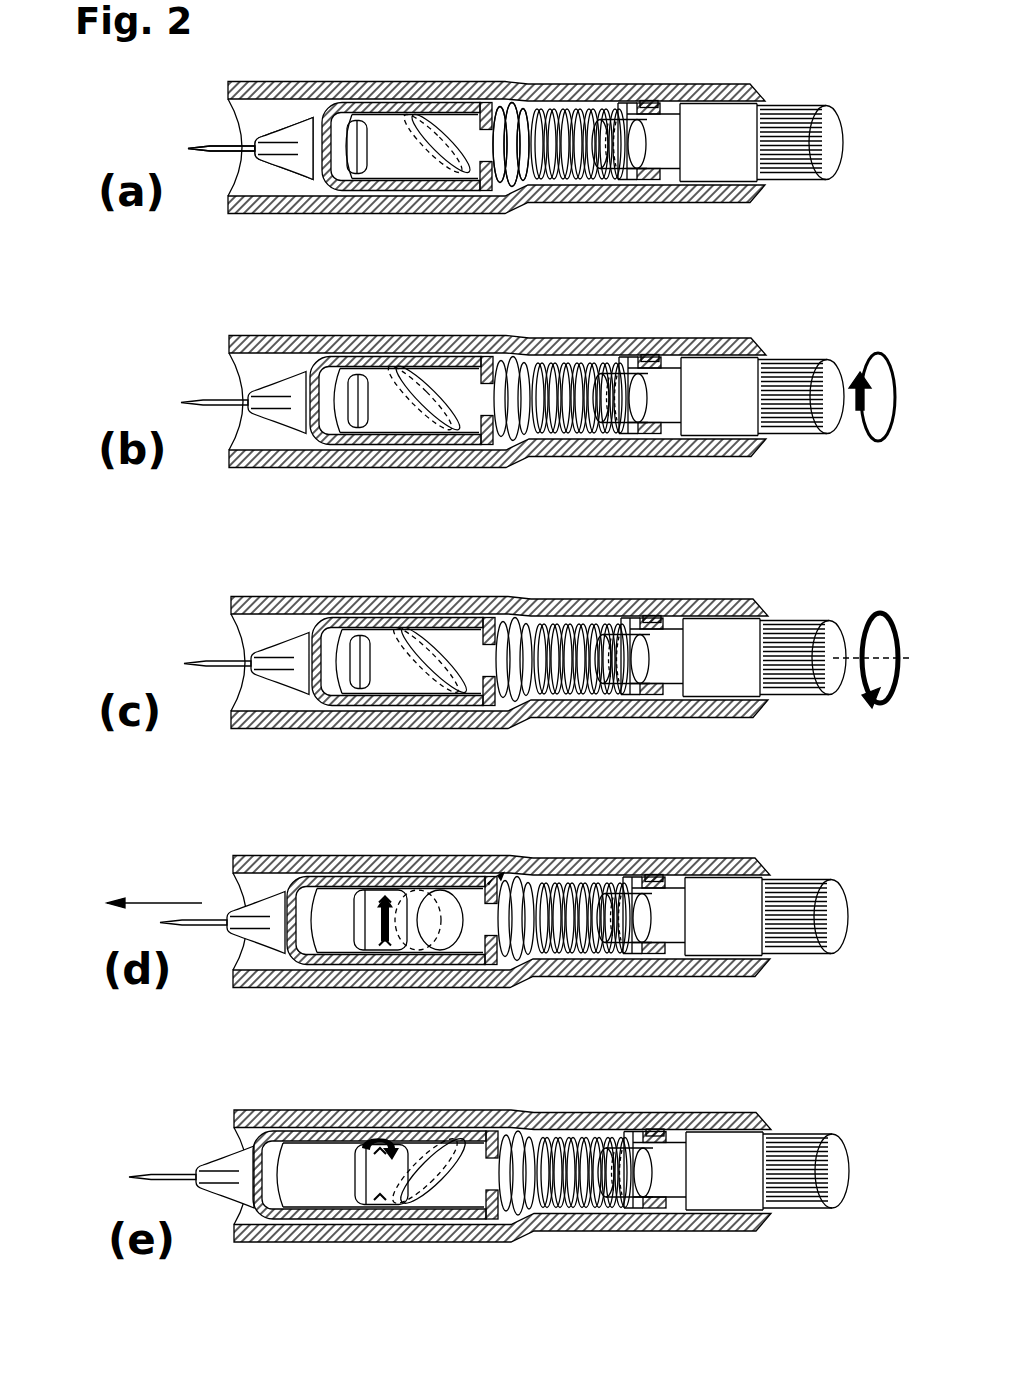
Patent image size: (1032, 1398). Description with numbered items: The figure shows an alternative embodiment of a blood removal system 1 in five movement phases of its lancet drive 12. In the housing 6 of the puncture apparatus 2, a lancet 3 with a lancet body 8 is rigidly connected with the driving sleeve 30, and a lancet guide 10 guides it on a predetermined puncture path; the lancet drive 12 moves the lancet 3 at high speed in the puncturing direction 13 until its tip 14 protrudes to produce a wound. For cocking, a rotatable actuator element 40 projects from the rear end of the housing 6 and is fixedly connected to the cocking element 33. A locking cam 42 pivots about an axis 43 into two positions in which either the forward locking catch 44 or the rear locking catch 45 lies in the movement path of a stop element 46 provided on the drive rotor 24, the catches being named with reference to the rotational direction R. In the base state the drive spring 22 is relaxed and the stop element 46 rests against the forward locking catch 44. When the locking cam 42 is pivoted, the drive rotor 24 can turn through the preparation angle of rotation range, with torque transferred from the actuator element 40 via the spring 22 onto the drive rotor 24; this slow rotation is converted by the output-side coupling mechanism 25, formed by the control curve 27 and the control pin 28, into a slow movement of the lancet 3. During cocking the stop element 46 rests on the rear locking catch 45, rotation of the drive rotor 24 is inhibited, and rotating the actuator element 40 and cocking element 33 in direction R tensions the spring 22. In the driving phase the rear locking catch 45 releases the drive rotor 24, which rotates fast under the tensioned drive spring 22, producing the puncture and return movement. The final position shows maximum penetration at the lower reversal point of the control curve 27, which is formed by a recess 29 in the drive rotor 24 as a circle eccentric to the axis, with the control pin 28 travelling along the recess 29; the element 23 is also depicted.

The blood removal system 1 is at (645, 78).
The puncture apparatus 2 is at (600, 456).
The lancet 3 is at (322, 103).
The housing 6 is at (545, 210).
The lancet body 8 is at (398, 365).
The lancet guide 10 is at (292, 442).
The lancet drive 12 is at (548, 112).
The puncturing direction 13 is at (170, 903).
The tip 14 is at (207, 160).
The drive spring 22 is at (585, 115).
The piston rod end 23 is at (598, 700).
The drive rotor 24 is at (496, 125).
The output-side coupling mechanism 25 is at (425, 688).
The control curve 27 is at (443, 690).
The control pin 28 is at (445, 953).
The recess 29 is at (415, 640).
The driving sleeve 30 is at (400, 110).
The cocking element 33 is at (660, 100).
The actuator element 40 is at (725, 170).
The locking cam 42 is at (483, 185).
The axis 43 is at (470, 1150).
The forward locking catch 44 is at (512, 175).
The rear locking catch 45 is at (487, 150).
The stop element 46 is at (520, 170).
The rotational direction R is at (872, 442).